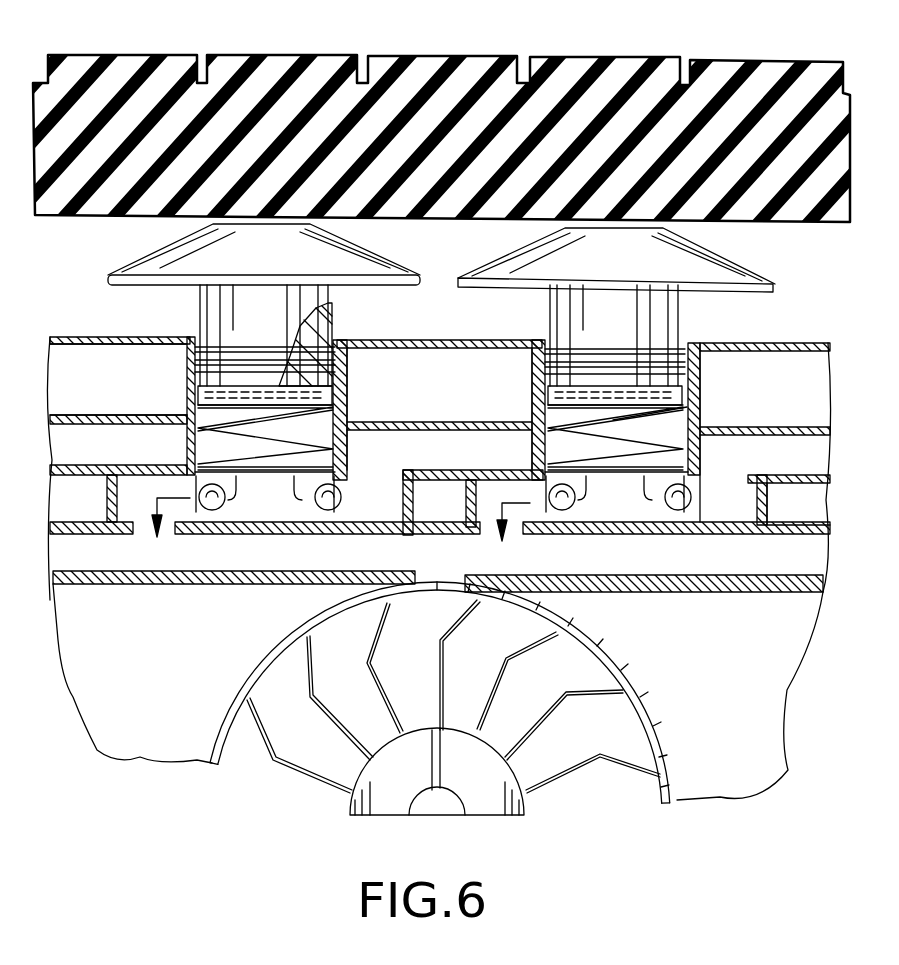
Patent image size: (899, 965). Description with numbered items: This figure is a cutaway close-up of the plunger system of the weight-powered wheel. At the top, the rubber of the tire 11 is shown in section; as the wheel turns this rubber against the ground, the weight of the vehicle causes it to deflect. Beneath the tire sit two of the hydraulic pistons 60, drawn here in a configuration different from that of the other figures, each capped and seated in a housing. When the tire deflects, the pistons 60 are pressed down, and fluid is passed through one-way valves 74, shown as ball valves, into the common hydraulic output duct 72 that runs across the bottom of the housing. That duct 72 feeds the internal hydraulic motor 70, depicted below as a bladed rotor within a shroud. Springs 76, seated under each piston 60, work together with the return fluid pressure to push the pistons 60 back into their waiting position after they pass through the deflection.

The rubber of the tire 11 is at (445, 68).
The pistons 60 is at (283, 267).
The springs 76 is at (283, 437).
The one-way valve 74 is at (227, 495).
The common hydraulic output duct 72 is at (455, 568).
The internal hydraulic motors 70 is at (424, 670).